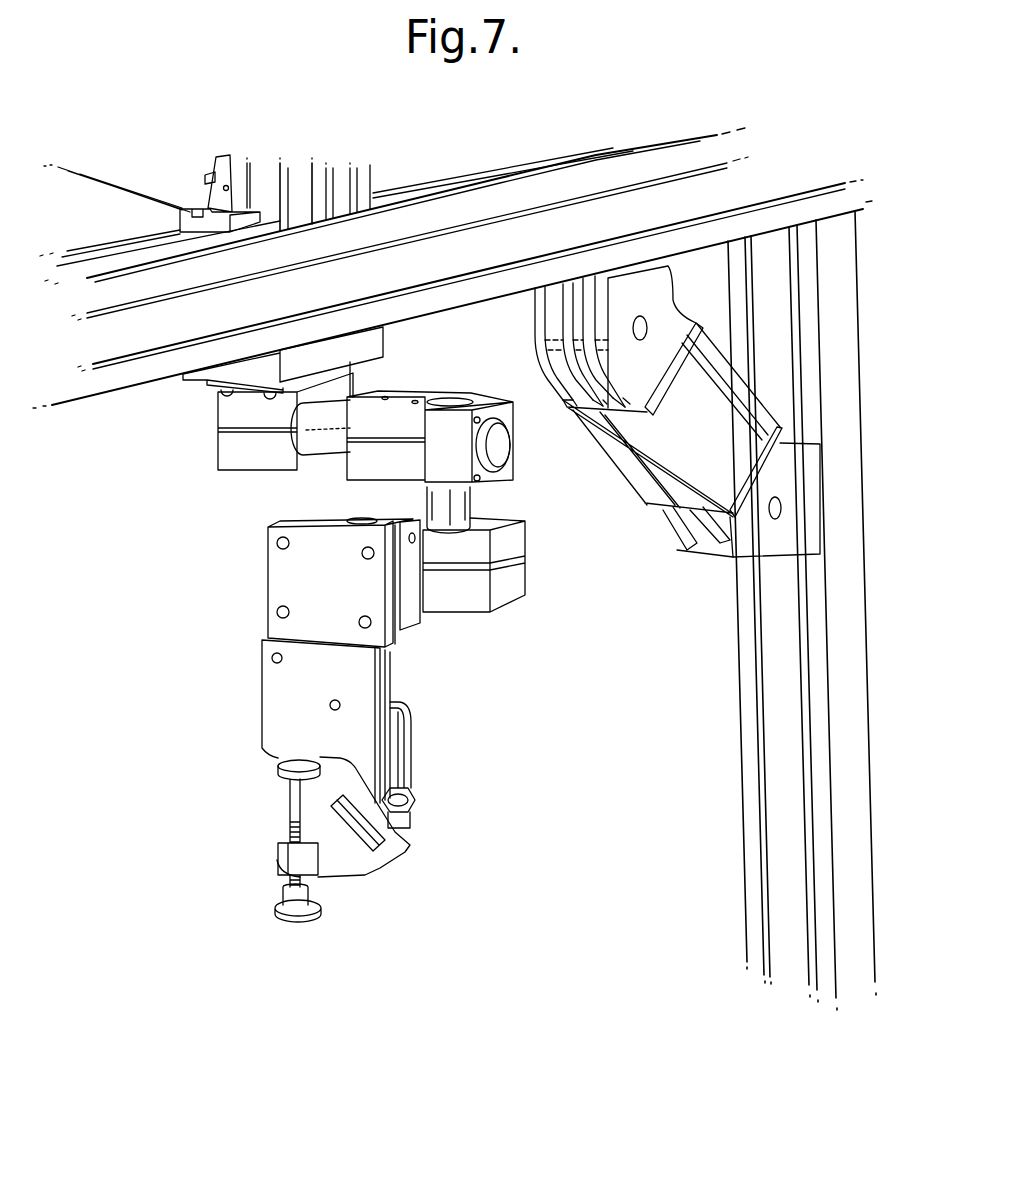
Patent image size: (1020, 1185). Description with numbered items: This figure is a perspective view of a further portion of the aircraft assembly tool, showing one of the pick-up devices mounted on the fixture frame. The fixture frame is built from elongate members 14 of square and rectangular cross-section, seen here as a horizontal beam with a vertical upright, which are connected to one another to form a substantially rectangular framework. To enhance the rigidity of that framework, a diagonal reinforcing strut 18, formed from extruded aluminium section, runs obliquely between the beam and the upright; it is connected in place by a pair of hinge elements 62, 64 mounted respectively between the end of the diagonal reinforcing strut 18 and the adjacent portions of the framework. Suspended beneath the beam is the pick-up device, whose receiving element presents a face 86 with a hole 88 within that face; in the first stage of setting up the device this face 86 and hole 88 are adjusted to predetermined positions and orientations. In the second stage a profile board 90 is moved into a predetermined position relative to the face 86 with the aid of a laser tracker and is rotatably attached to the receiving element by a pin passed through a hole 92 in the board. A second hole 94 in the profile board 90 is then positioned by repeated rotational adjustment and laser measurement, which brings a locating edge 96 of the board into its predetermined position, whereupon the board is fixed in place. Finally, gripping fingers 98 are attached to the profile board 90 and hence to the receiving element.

The elongate members 14 is at (505, 197).
The diagonal reinforcing struts 18 is at (747, 397).
The hinge element 62 is at (817, 488).
The hinge element 64 is at (753, 523).
The face 86 is at (293, 571).
The hole 88 is at (277, 612).
The profile board 90 is at (270, 692).
The hole 92 is at (272, 658).
The second hole 94 is at (340, 703).
The locating edge 96 is at (272, 760).
The gripping fingers 98 is at (335, 863).